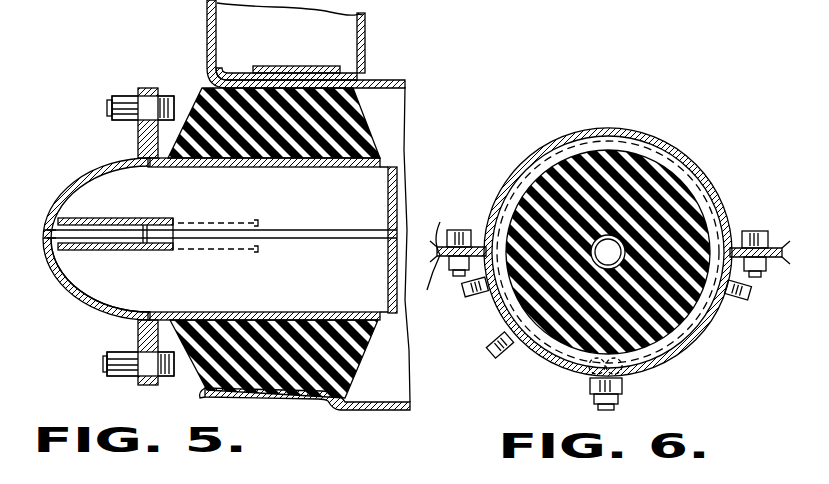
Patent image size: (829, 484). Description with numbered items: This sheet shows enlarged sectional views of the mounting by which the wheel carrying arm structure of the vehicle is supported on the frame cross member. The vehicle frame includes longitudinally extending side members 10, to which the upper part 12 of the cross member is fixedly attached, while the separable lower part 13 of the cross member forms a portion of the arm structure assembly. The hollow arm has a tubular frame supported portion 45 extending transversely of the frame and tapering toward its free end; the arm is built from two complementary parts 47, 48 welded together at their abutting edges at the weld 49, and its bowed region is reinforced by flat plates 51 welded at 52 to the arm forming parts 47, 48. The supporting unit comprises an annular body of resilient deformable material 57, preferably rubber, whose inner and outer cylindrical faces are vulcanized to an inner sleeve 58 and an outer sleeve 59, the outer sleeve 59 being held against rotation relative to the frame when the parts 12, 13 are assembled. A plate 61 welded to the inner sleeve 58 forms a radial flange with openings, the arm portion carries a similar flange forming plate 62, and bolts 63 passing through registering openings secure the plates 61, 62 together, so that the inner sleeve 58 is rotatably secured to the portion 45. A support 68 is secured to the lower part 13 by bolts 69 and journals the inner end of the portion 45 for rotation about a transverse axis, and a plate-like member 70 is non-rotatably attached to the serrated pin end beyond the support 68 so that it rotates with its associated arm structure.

In FIG. 5, the side member 10 is at (298, 72).
In FIG. 5, the upper part of cross member 12 is at (212, 58).
In FIG. 6, the upper part of cross member 12 is at (440, 235).
In FIG. 5, the lower part of cross member 13 is at (352, 410).
In FIG. 6, the lower part of cross member 13 is at (441, 263).
In FIG. 5, the tubular frame supported portion 45 is at (397, 180).
In FIG. 5, the arm forming part 47 is at (100, 167).
In FIG. 5, the arm forming part 48 is at (84, 303).
In FIG. 5, the weld 49 is at (48, 232).
In FIG. 5, the flat plate 51 is at (145, 242).
In FIG. 5, the weld 52 is at (63, 222).
In FIG. 5, the annular body of resilient deformable material 57 is at (355, 113).
In FIG. 5, the inner sleeve 58 is at (387, 160).
In FIG. 5, the outer sleeve 59 is at (333, 72).
In FIG. 5, the plate 61 is at (147, 380).
In FIG. 5, the flange forming plate 62 is at (140, 380).
In FIG. 5, the bolt 63 is at (123, 100).
In FIG. 6, the support 68 is at (497, 217).
In FIG. 6, the bolt 69 is at (468, 295).
In FIG. 6, the plate-like member 70 is at (677, 183).